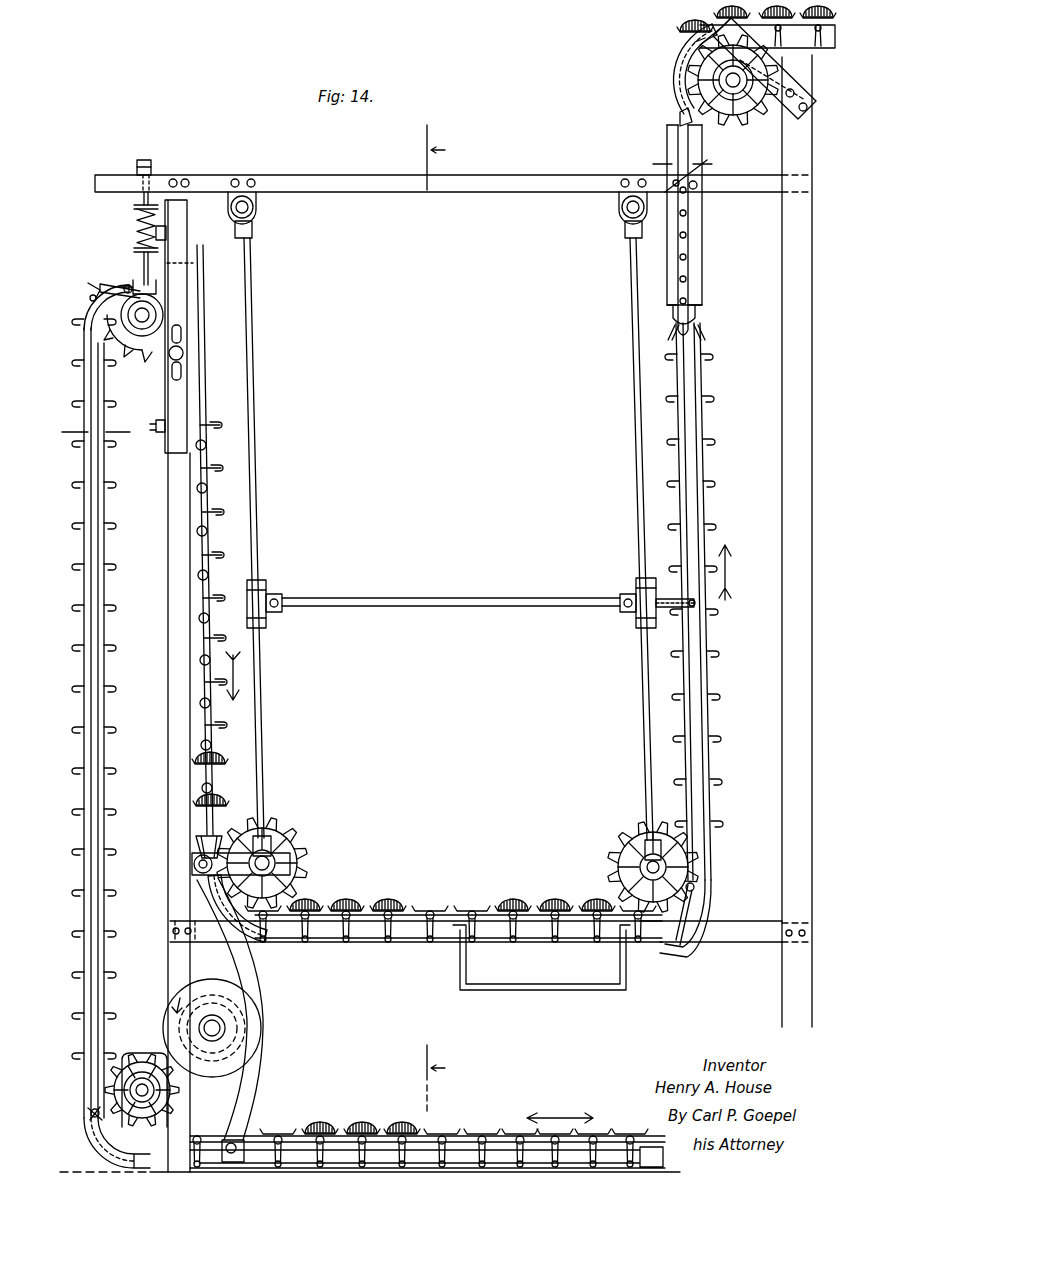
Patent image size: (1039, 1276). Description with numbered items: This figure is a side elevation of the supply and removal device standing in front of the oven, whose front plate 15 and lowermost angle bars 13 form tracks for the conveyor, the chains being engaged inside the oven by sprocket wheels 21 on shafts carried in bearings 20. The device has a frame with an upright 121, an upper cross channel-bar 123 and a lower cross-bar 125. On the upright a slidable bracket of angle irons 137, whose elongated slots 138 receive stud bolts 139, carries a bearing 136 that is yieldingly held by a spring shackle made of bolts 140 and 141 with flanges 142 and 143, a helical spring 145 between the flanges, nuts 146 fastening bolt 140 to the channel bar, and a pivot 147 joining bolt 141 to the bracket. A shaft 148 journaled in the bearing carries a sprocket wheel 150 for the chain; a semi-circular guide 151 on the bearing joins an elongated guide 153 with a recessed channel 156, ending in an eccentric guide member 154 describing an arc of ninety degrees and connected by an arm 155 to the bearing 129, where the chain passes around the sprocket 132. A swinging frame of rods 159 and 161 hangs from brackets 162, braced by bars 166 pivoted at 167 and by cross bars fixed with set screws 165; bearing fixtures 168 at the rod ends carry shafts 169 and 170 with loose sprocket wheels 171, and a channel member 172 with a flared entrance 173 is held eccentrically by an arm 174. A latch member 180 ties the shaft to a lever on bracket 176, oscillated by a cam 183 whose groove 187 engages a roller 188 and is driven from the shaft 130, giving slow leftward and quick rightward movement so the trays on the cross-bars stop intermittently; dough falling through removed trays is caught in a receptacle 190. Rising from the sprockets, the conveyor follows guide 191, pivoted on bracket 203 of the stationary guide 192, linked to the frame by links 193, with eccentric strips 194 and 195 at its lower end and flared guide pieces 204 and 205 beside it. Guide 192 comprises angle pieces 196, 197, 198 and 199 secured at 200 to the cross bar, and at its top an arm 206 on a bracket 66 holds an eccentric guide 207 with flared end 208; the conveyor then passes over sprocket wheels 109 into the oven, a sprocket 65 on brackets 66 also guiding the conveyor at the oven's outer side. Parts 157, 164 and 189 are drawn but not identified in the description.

The angle bar 13 is at (458, 1150).
The sheet metal plate 15 is at (441, 620).
The bearing 20 is at (92, 423).
The sprocket wheel 21 is at (683, 169).
The sprocket 65 is at (730, 116).
The bracket 66 is at (742, 42).
The sprocket wheel 109 is at (752, 124).
The upright 121 is at (172, 518).
The upper longitudinal cross channel-bar 123 is at (415, 190).
The lower cross-bar 125 is at (447, 930).
The bearing 129 is at (140, 1032).
The shaft 130 is at (148, 1097).
The sprocket 132 is at (120, 1025).
The bearing 136 is at (158, 290).
The angle iron 137 is at (212, 395).
The elongated slot 138 is at (180, 335).
The stud bolt 139 is at (158, 432).
The bolt 140 is at (140, 203).
The bolt 141 is at (142, 262).
The flange 142 is at (137, 228).
The flange 143 is at (134, 207).
The helical spring 145 is at (134, 250).
The nut 146 is at (165, 158).
The pivotal connection 147 is at (125, 284).
The shaft 148 is at (100, 318).
The sprocket wheel 150 is at (140, 360).
The semi-circular guide 151 is at (90, 288).
The elongated guide 153 is at (106, 549).
The eccentric guide member 154 is at (110, 1124).
The arm 155 is at (91, 1112).
The recessed channel 156 is at (96, 677).
The conveyor 157 is at (399, 917).
The rod 159 is at (260, 478).
The rod 161 is at (636, 402).
The bracket 162 is at (256, 200).
The coupling 164 is at (637, 585).
The set screw 165 is at (660, 596).
The bar 166 is at (436, 600).
The pivotal connection 167 is at (279, 596).
The bearing fixture 168 is at (282, 822).
The shaft 169 is at (647, 867).
The shaft 170 is at (312, 840).
The sprocket wheel 171 is at (276, 824).
The channel member 172 is at (250, 920).
The flared entrance end 173 is at (215, 838).
The arm 174 is at (278, 868).
The bracket 176 is at (240, 968).
The latch member 180 is at (200, 866).
The cam 183 is at (236, 994).
The groove 187 is at (250, 1046).
The roller 188 is at (266, 1025).
The drum shaft 189 is at (218, 1024).
The receptacle 190 is at (556, 978).
The guide 191 is at (700, 428).
The stationary guide 192 is at (703, 244).
The link 193 is at (668, 608).
The metal strip 194 is at (678, 943).
The metal strip 195 is at (703, 940).
The angle piece 196 is at (668, 257).
The angle piece 197 is at (677, 278).
The angle piece 198 is at (703, 262).
The angle piece 199 is at (688, 277).
The securing point 200 is at (695, 190).
The bracket 203 is at (700, 314).
The flared guide piece 204 is at (670, 338).
The flared guide piece 205 is at (700, 332).
The arm 206 is at (688, 69).
The eccentric guide 207 is at (680, 83).
The flared entrance end 208 is at (678, 116).